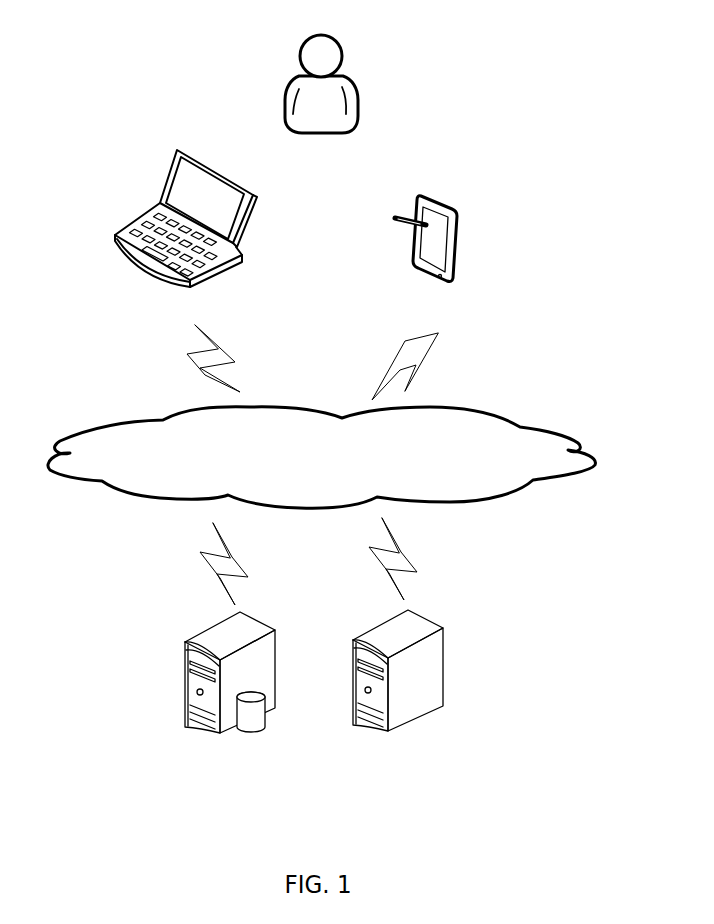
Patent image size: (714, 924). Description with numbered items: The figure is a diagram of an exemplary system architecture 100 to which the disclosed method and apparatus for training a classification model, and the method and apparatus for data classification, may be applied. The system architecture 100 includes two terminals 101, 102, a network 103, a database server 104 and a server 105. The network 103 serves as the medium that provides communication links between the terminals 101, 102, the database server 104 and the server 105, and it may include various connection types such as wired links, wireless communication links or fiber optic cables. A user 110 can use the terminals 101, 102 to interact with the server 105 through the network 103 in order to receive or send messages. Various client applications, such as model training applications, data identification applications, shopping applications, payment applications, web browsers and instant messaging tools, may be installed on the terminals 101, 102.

The system architecture 100 is at (567, 36).
The user 110 is at (321, 100).
The terminal 101 is at (186, 234).
The terminal 102 is at (426, 257).
The network 103 is at (321, 457).
The database server 104 is at (230, 697).
The server 105 is at (398, 696).